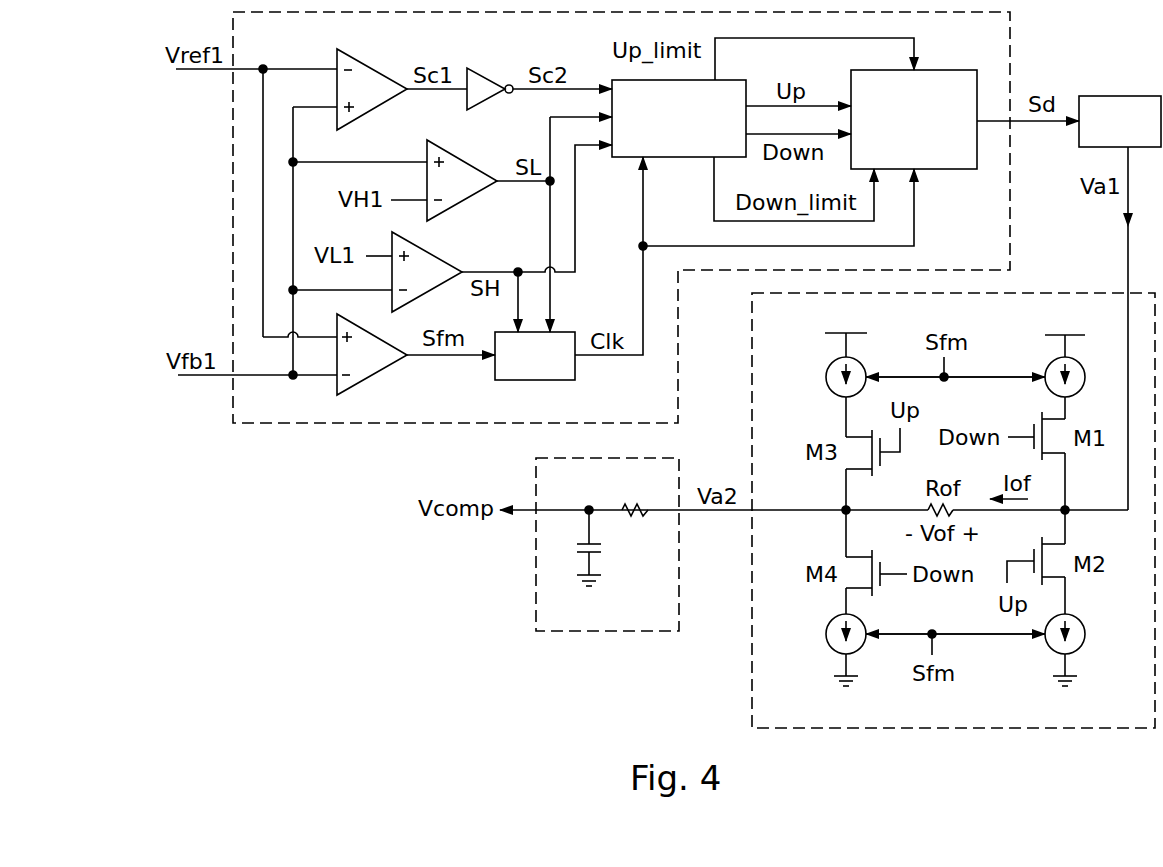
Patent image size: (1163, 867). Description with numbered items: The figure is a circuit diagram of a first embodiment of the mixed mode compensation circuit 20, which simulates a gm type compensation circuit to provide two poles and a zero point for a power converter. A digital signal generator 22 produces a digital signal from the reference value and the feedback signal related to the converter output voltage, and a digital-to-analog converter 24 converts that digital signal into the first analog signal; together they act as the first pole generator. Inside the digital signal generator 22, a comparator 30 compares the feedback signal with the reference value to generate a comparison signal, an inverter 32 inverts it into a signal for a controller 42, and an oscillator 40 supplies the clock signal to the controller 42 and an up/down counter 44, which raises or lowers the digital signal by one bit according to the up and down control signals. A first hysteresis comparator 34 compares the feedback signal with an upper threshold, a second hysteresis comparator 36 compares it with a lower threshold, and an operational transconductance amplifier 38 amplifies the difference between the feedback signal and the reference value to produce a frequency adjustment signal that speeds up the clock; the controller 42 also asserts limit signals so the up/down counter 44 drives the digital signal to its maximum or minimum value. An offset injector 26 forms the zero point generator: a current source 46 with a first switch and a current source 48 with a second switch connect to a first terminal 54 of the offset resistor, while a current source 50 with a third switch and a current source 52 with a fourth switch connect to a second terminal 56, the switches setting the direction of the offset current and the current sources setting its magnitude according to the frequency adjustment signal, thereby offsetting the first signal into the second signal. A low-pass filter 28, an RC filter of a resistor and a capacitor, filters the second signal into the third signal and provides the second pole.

The mixed mode compensation circuit 20 is at (369, 692).
The digital signal generator 22 is at (1010, 186).
The digital-to-analog converter 24 is at (1124, 96).
The offset injector 26 is at (1040, 293).
The low-pass filter 28 is at (536, 550).
The comparator 30 is at (369, 112).
The inverter 32 is at (483, 79).
The hysteresis comparator 34 is at (462, 161).
The hysteresis comparator 36 is at (437, 246).
The operational transconductance amplifier 38 is at (374, 378).
The oscillator 40 is at (575, 370).
The controller 42 is at (678, 157).
The up/down counter 44 is at (946, 169).
The current source 46 is at (1050, 363).
The current source 48 is at (1048, 648).
The current source 50 is at (835, 362).
The current source 52 is at (830, 648).
The first terminal 54 is at (1068, 507).
The second terminal 56 is at (843, 514).